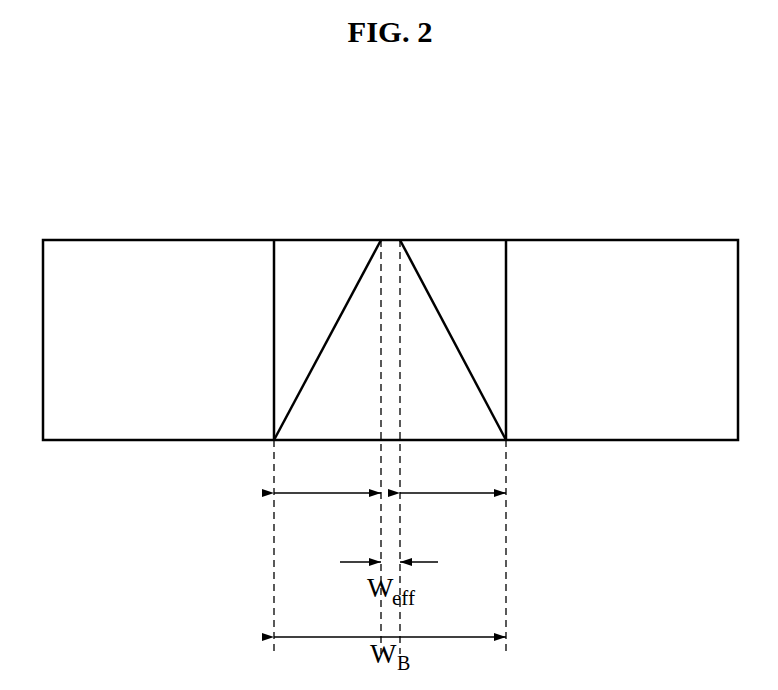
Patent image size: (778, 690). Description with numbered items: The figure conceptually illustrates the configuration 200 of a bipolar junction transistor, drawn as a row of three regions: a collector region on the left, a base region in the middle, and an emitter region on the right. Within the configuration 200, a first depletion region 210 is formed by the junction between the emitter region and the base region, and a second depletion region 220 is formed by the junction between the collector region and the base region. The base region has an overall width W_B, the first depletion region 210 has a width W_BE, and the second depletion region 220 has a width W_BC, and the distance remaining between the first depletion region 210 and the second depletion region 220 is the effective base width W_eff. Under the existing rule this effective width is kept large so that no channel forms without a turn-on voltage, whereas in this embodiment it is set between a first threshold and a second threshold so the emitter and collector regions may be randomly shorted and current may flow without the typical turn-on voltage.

The configuration of the BJT 200 is at (412, 119).
The second depletion region 220 is at (319, 260).
The first depletion region 210 is at (459, 260).